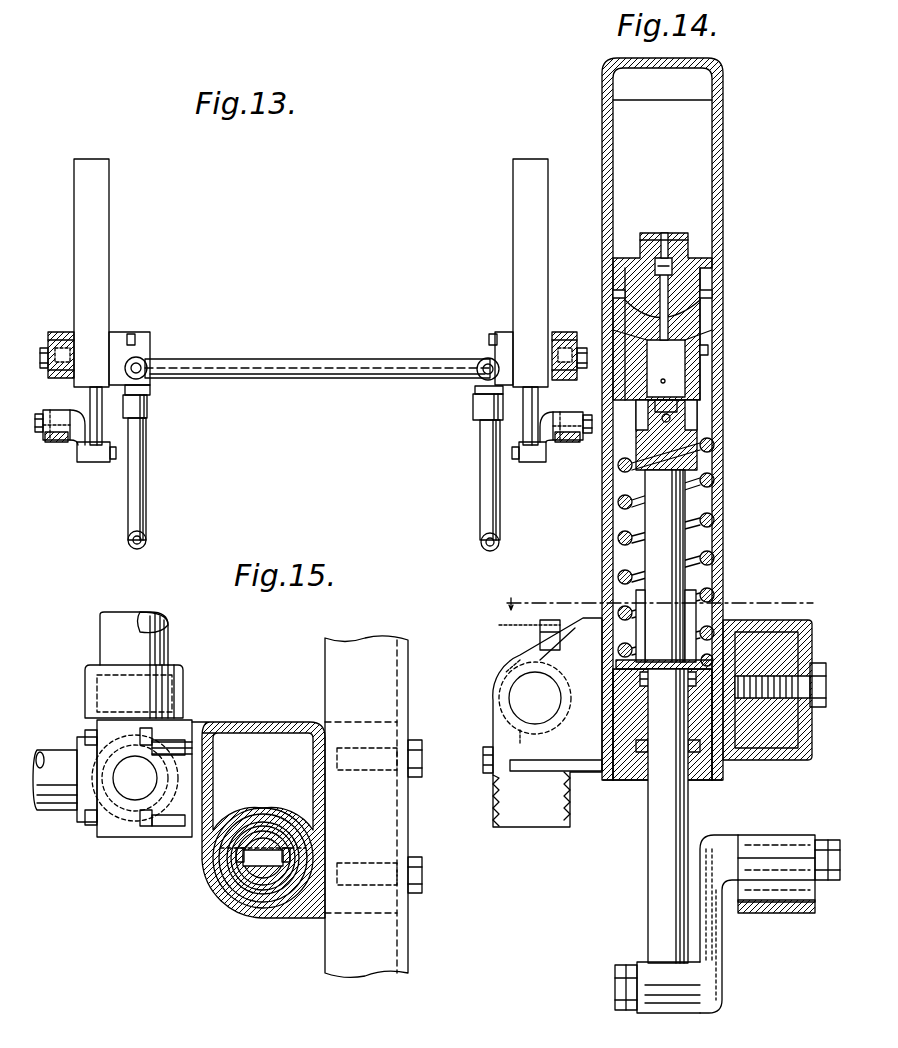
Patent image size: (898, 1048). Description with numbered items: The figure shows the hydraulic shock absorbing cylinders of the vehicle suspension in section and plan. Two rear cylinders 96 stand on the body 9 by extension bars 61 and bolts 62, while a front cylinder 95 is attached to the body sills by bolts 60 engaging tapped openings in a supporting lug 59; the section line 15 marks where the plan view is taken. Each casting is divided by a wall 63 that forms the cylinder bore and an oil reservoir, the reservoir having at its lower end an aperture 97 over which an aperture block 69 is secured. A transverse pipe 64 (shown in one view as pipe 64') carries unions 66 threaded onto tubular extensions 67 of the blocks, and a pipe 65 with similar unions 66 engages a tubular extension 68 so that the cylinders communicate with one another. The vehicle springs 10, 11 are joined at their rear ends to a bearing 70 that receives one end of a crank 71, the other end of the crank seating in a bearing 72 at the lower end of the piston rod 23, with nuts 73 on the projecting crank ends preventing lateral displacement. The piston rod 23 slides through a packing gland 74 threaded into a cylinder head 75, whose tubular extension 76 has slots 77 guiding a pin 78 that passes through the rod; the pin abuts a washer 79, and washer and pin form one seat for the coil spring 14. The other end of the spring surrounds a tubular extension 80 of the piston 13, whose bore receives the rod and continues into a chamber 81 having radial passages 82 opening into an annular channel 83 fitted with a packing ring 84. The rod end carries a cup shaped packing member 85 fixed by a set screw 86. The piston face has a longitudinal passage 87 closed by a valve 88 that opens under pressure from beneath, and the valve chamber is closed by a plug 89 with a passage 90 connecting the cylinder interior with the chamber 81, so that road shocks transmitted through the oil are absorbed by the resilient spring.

In FIG. 14, the body 9 is at (772, 620).
In FIG. 15, the body 9 is at (366, 807).
In FIG. 14, the vehicle spring 10 is at (791, 914).
In FIG. 13, the vehicle spring 11 is at (56, 444).
In FIG. 14, the piston 13 is at (684, 344).
In FIG. 14, the coil spring 14 is at (709, 482).
In FIG. 14, the section line 15- 15 is at (658, 603).
In FIG. 13, the piston rod 23 is at (103, 431).
In FIG. 14, the piston rod 23 is at (652, 853).
In FIG. 15, the piston rod 23 is at (262, 900).
In FIG. 13, the supporting bracket or lug 59 is at (66, 332).
In FIG. 14, the supporting bracket or lug 59 is at (785, 760).
In FIG. 15, the supporting bracket or lug 59 is at (380, 912).
In FIG. 14, the bolt 60 is at (819, 708).
In FIG. 15, the bolt 60 is at (418, 745).
In FIG. 13, the extension bar 61 is at (47, 348).
In FIG. 13, the bolt 62 is at (44, 370).
In FIG. 14, the wall 63 is at (697, 131).
In FIG. 15, the wall 63 is at (253, 800).
In FIG. 15, the pipe 64 is at (57, 735).
In FIG. 13, the connecting rod 64' is at (317, 352).
In FIG. 13, the pipe 65 is at (148, 536).
In FIG. 15, the pipe 65 is at (152, 634).
In FIG. 13, the union 66 is at (148, 410).
In FIG. 14, the union 66 is at (506, 665).
In FIG. 15, the union 66 is at (175, 690).
In FIG. 13, the tubular extension 67 is at (143, 360).
In FIG. 14, the tubular extension 67 is at (494, 810).
In FIG. 13, the tubular extension 68 is at (150, 391).
In FIG. 15, the tubular extension 68 is at (97, 685).
In FIG. 14, the aperture block 69 is at (495, 735).
In FIG. 15, the aperture block 69 is at (127, 826).
In FIG. 13, the bearing 70 is at (60, 410).
In FIG. 14, the bearing 70 is at (758, 835).
In FIG. 14, the crank 71 is at (725, 950).
In FIG. 13, the bearing 72 is at (92, 463).
In FIG. 14, the bearing 72 is at (665, 1015).
In FIG. 13, the nut 73 is at (39, 433).
In FIG. 14, the nut 73 is at (824, 840).
In FIG. 14, the packing gland 74 is at (645, 790).
In FIG. 14, the cylinder head 75 is at (622, 776).
In FIG. 14, the tubular extension 76 is at (712, 606).
In FIG. 15, the tubular extension 76 is at (270, 822).
In FIG. 14, the slot 77 is at (615, 590).
In FIG. 15, the slot 77 is at (270, 885).
In FIG. 14, the pin 78 is at (660, 690).
In FIG. 15, the pin 78 is at (240, 902).
In FIG. 14, the washer 79 is at (556, 714).
In FIG. 14, the tubular extension 80 is at (706, 432).
In FIG. 14, the chamber 81 is at (702, 336).
In FIG. 14, the radially disposed passage 82 is at (703, 353).
In FIG. 14, the annular channel 83 is at (620, 332).
In FIG. 14, the packing ring 84 is at (710, 350).
In FIG. 14, the cup shaped packing member 85 is at (672, 405).
In FIG. 14, the set screw 86 is at (666, 381).
In FIG. 14, the longitudinal passage 87 is at (690, 292).
In FIG. 14, the valve 88 is at (672, 268).
In FIG. 14, the plug 89 is at (672, 233).
In FIG. 14, the passage 90 is at (665, 233).
In FIG. 14, the front cylinder 95 is at (604, 126).
In FIG. 15, the front cylinder 95 is at (212, 888).
In FIG. 13, the rear cylinder 96 is at (93, 236).
In FIG. 15, the aperture 97 is at (230, 722).